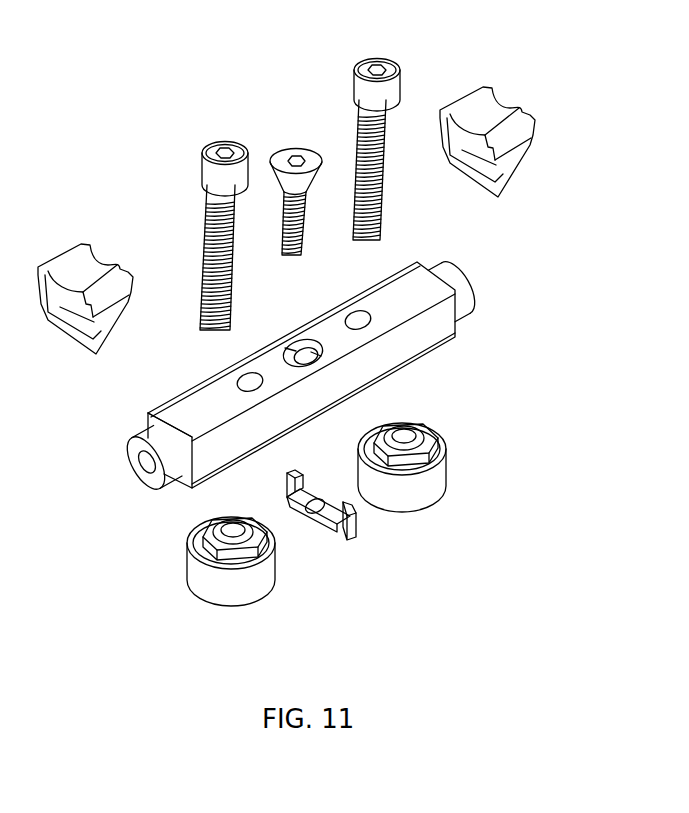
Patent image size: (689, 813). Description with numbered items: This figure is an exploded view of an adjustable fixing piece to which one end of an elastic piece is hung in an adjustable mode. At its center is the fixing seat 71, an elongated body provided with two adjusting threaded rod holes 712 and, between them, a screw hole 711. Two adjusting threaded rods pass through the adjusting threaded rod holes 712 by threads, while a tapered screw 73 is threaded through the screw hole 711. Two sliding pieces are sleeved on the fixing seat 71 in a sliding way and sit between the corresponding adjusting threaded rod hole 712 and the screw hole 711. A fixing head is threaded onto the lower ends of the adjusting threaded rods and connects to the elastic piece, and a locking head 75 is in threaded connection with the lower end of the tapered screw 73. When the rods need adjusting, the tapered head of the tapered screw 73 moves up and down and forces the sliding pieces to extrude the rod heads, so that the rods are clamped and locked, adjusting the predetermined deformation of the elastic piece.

The fixing seat 71 is at (183, 410).
The screw hole 711 is at (307, 355).
The adjusting threaded rod holes 712 is at (252, 383).
The tapered screw 73 is at (297, 146).
The locking head 75 is at (323, 525).